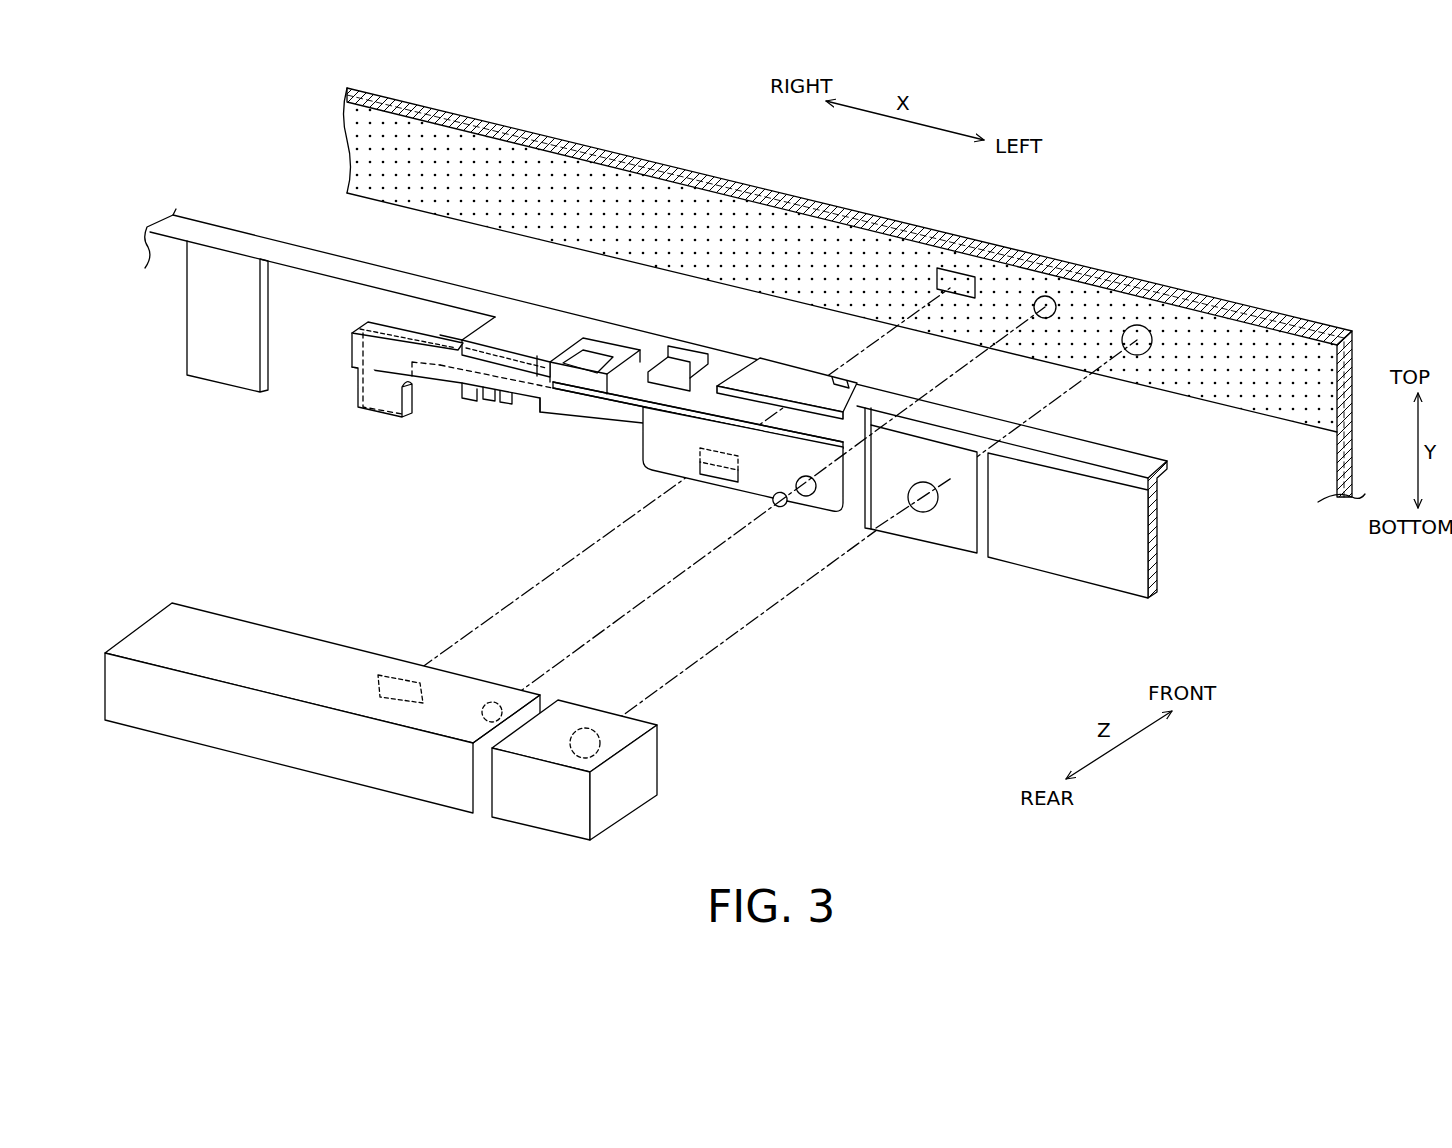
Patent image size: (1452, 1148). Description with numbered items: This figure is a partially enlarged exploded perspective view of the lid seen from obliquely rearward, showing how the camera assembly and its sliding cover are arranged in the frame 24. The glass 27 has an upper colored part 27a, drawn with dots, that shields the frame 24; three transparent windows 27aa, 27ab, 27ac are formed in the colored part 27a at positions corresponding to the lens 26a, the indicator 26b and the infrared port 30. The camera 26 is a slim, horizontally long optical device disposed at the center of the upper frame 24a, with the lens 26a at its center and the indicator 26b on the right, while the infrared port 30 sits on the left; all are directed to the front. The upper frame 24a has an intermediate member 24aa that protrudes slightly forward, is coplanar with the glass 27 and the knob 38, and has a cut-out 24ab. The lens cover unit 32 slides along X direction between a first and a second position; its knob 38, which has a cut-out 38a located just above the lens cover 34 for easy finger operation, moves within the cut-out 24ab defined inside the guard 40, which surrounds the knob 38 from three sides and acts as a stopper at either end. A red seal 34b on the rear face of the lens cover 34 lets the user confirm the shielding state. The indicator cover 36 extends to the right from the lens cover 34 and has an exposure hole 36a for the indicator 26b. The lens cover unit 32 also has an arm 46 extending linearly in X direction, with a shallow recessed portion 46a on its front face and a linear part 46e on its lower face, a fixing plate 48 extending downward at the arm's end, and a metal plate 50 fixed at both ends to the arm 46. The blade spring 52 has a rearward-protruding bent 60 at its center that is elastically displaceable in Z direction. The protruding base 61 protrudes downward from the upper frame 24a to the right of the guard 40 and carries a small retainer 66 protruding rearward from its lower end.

The glass 27 is at (855, 295).
The colored part 27a is at (778, 222).
The window 27aa is at (1049, 295).
The window 27ab is at (951, 267).
The window 27ac is at (1138, 324).
The frame 24 is at (709, 405).
The upper frame 24a is at (656, 343).
The intermediate member 24aa is at (1167, 461).
The cut-out 24ab is at (698, 358).
The camera 26 is at (322, 691).
The lens 26a is at (496, 710).
The indicator 26b is at (402, 678).
The infrared port 30 is at (640, 770).
The lens cover unit 32 is at (844, 518).
The lens cover 34 is at (801, 496).
The seal 34b is at (784, 502).
The indicator cover 36 is at (723, 484).
The exposure hole 36a is at (710, 474).
The knob 38 is at (822, 371).
The cut-out 38a is at (846, 372).
The guard 40 is at (689, 357).
The arm 46 is at (597, 463).
The recessed portion 46a is at (543, 421).
The linear part 46e is at (505, 405).
The fixing plate 48 is at (378, 406).
The metal plate 50 is at (608, 340).
The blade spring 52 is at (630, 349).
The bent 60 is at (537, 356).
The protruding base 61 is at (513, 346).
The retainer 66 is at (484, 402).